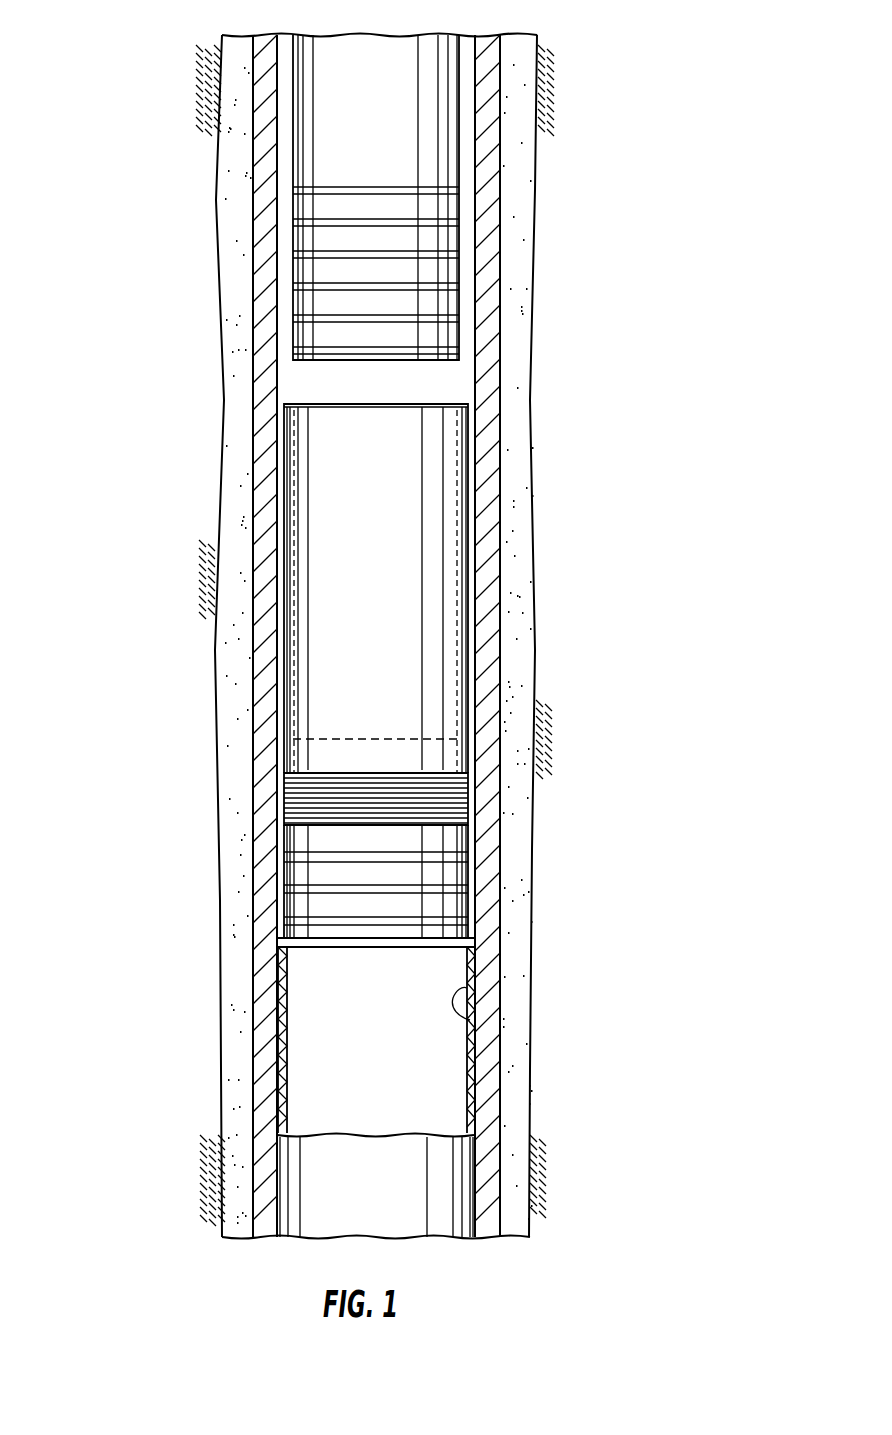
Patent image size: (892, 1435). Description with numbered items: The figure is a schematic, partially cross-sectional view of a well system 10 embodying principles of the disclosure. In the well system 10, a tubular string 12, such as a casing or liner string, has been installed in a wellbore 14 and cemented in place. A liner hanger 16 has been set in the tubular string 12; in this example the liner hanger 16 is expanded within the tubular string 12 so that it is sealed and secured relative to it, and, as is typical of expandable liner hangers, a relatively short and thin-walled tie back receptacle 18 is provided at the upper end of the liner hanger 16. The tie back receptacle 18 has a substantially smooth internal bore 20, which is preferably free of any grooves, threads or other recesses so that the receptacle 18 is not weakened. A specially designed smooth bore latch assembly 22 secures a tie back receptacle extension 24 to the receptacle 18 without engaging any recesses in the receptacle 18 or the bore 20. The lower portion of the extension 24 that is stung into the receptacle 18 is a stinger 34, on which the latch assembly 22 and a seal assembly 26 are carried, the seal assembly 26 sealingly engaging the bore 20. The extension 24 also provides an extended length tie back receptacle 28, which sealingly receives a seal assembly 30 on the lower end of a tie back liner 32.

The well system 10 is at (640, 68).
The tubular string 12 is at (500, 188).
The wellbore 14 is at (226, 523).
The liner hanger 16 is at (478, 1182).
The tie back receptacle 18 is at (283, 1017).
The internal bore 20 is at (470, 1020).
The smooth bore latch assembly 22 is at (283, 787).
The tie back receptacle extension 24 is at (468, 568).
The seal assembly 26 is at (283, 888).
The extended length tie back receptacle 28 is at (285, 460).
The seal assembly 30 is at (290, 283).
The tie back liner 32 is at (290, 90).
The stinger 34 is at (470, 872).